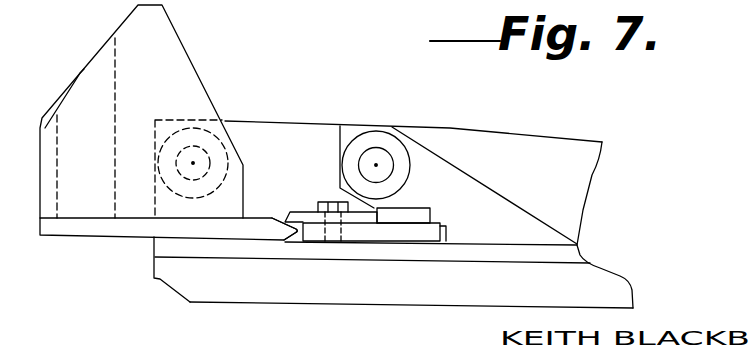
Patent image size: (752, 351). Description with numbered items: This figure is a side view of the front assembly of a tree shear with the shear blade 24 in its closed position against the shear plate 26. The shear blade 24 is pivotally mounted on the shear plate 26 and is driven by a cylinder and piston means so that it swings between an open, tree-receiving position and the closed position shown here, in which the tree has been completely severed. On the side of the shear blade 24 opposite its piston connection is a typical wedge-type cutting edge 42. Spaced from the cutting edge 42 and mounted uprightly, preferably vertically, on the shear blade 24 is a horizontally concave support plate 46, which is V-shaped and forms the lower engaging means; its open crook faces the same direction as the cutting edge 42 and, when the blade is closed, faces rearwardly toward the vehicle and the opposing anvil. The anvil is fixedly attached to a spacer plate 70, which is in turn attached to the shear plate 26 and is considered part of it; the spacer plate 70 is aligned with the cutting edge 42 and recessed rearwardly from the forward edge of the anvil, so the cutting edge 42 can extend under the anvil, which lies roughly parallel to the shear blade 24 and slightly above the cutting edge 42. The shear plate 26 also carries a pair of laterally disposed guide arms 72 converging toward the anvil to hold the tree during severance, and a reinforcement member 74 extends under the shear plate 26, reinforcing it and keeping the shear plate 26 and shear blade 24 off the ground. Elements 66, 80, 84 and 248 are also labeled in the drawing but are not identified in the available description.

The shear blade 24 is at (110, 230).
The shear plate 26 is at (522, 255).
The wedge-type cutting edge 42 is at (293, 229).
The horizontally concave support plate 46 is at (166, 81).
The brace 66 is at (373, 0).
The spacer plate 70 is at (440, 230).
The guide arms 72 is at (210, 241).
The reinforcement member 74 is at (410, 295).
The roller 80 is at (357, 104).
The roller bracket 84 is at (288, 0).
The cover plate 248 is at (411, 75).